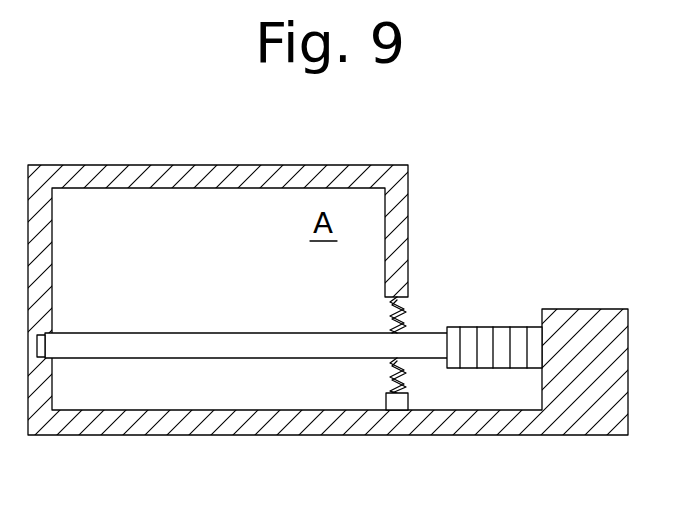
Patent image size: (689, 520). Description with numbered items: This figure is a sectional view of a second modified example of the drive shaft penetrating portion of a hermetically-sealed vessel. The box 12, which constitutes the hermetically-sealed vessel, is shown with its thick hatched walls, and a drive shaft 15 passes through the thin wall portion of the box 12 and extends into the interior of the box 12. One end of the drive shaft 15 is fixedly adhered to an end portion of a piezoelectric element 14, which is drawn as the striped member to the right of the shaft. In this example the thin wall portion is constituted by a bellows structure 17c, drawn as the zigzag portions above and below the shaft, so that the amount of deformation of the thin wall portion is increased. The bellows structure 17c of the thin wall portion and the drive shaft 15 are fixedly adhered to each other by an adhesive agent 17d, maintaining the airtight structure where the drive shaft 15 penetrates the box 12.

The box 12 is at (410, 239).
The piezoelectric element 14 is at (500, 327).
The drive shaft 15 is at (221, 334).
The bellows structure 17c is at (407, 378).
The adhesive agent 17d is at (413, 327).